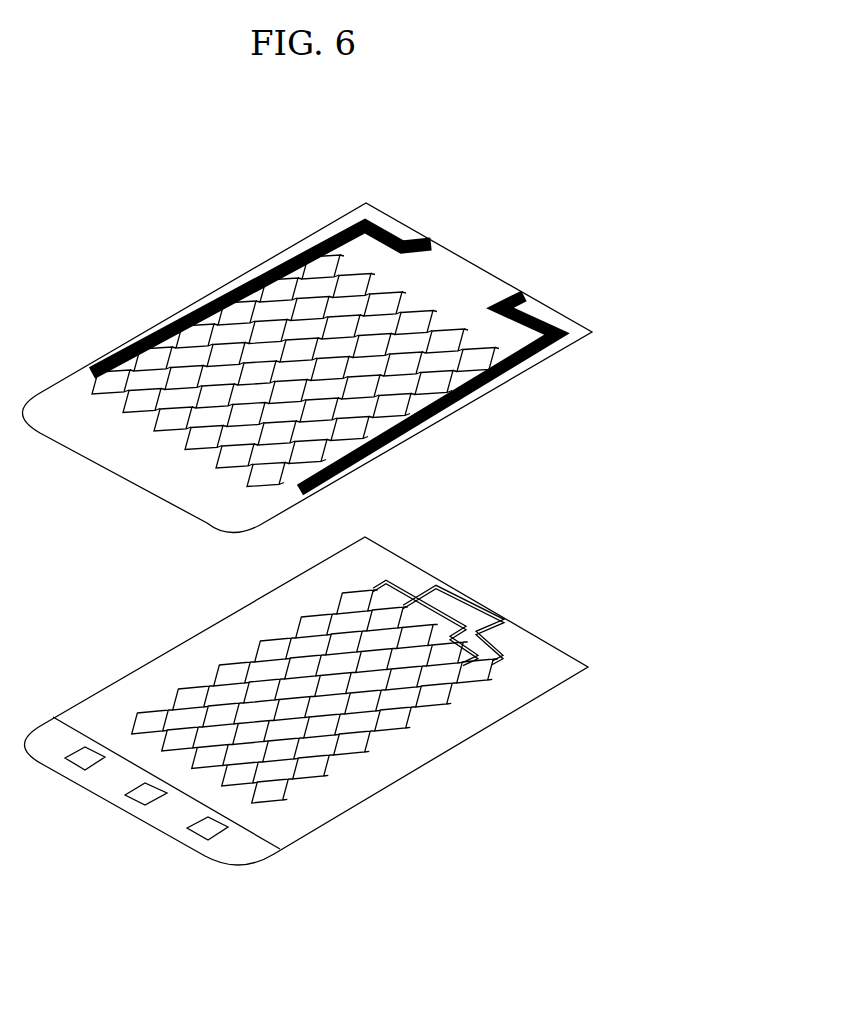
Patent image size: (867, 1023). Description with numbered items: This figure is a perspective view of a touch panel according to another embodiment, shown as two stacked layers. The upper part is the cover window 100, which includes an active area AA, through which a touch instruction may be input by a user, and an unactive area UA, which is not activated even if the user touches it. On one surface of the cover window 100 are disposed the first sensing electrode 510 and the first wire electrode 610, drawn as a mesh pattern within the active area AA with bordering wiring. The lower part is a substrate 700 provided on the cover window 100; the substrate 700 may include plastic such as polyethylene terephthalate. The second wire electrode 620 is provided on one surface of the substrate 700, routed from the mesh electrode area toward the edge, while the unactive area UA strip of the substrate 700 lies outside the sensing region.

The cover window 100 is at (225, 282).
The first sensing electrode 510 is at (507, 368).
The first wire electrode 610 is at (317, 237).
The substrate 700 is at (223, 618).
The second wire electrode 620 is at (484, 611).
The active area AA is at (423, 400).
The unactive area UA is at (162, 471).